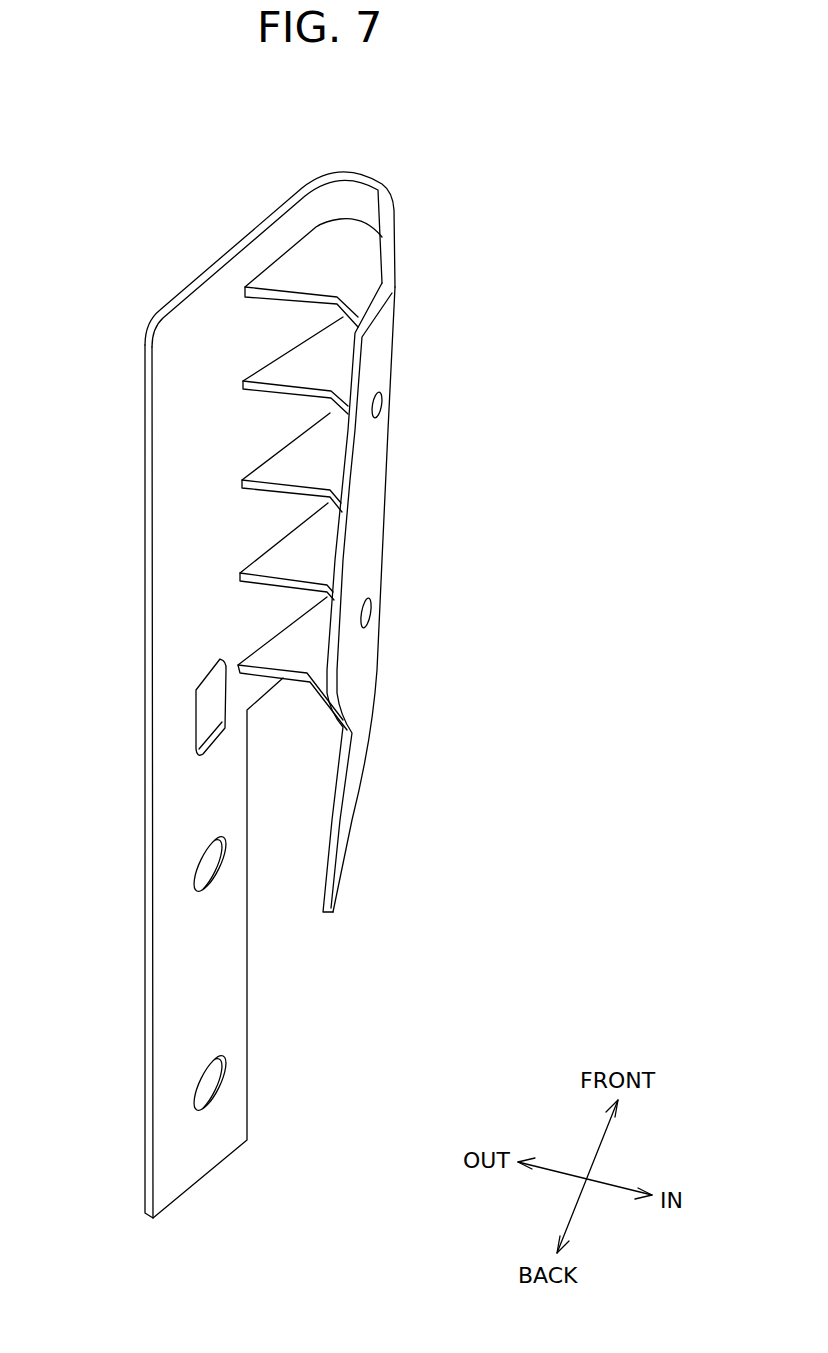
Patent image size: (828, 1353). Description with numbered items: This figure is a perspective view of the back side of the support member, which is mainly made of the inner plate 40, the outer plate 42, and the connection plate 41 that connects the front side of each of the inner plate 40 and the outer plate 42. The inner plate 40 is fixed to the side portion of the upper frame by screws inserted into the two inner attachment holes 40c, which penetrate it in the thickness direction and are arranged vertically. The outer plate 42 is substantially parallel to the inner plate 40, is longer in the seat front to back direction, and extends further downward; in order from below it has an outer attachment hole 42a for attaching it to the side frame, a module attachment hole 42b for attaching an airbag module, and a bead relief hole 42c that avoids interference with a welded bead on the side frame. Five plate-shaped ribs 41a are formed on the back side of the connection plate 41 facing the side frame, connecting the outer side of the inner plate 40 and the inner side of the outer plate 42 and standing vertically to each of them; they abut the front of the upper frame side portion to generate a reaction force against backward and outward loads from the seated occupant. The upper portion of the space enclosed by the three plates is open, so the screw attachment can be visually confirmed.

The inner plate 40 is at (355, 768).
The inner attachment holes 40c is at (386, 405).
The connection plate 41 is at (350, 200).
The plate-shaped ribs 41a is at (290, 377).
The outer plate 42 is at (203, 1147).
The outer attachment hole 42a is at (195, 1074).
The module attachment hole 42b is at (198, 862).
The bead relief hole 42c is at (193, 725).